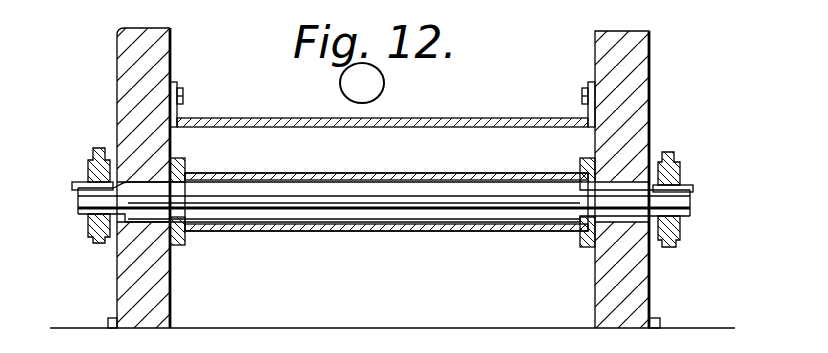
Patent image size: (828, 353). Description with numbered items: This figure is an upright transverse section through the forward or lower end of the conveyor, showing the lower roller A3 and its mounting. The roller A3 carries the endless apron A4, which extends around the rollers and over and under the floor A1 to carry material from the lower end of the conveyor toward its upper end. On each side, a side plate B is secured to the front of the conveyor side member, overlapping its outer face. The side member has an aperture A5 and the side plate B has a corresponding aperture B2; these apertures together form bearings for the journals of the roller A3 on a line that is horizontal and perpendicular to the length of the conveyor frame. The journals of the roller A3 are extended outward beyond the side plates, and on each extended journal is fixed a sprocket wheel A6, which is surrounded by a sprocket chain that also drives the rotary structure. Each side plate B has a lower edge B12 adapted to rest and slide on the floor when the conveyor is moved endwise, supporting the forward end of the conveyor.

The side plate B is at (160, 56).
The aperture B2 is at (143, 182).
The lower edge B12 is at (128, 312).
The floor A1 is at (186, 159).
The roller A3 is at (312, 203).
The endless apron A4 is at (433, 233).
The aperture A5 is at (110, 233).
The sprocket wheel A6 is at (90, 168).